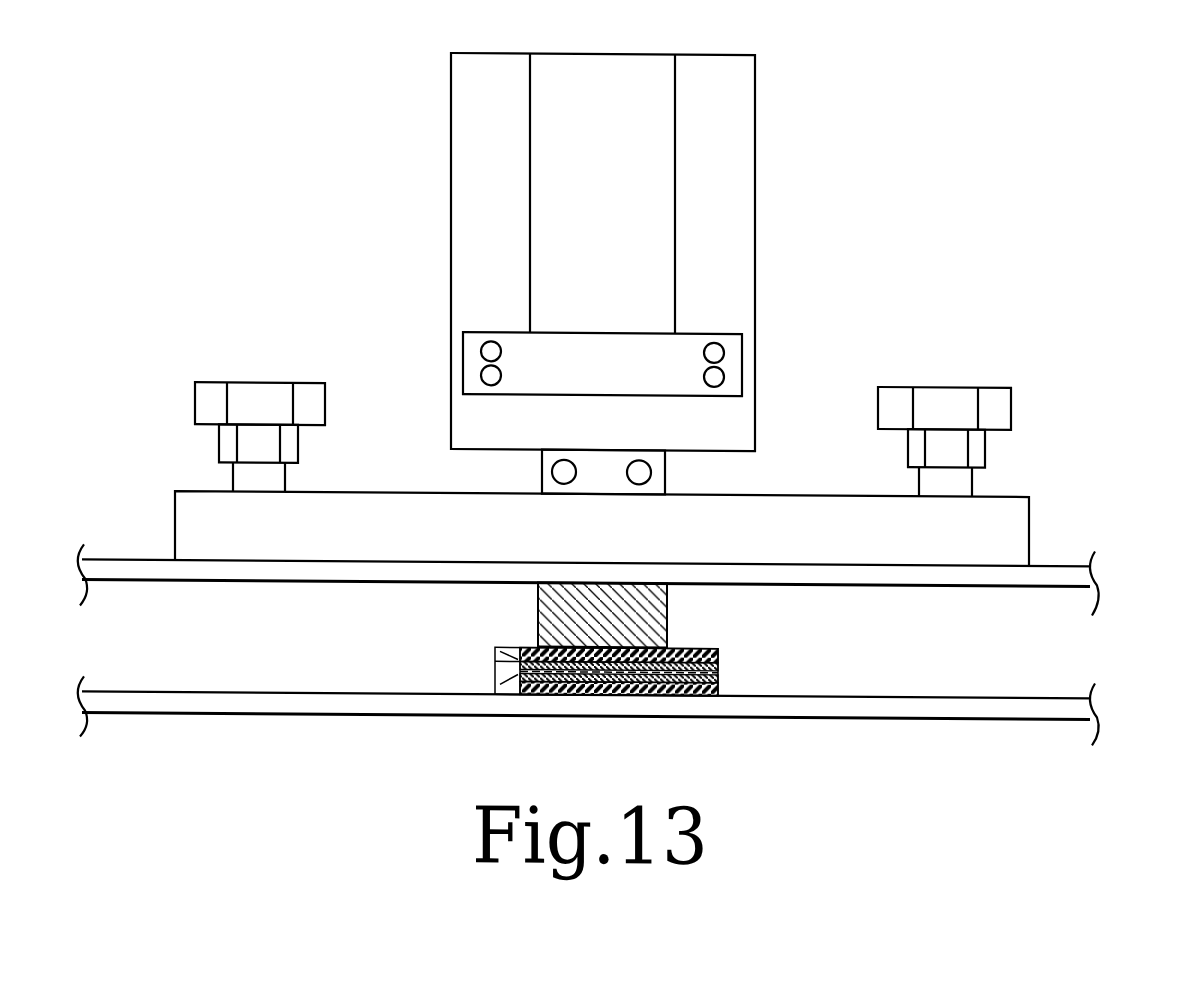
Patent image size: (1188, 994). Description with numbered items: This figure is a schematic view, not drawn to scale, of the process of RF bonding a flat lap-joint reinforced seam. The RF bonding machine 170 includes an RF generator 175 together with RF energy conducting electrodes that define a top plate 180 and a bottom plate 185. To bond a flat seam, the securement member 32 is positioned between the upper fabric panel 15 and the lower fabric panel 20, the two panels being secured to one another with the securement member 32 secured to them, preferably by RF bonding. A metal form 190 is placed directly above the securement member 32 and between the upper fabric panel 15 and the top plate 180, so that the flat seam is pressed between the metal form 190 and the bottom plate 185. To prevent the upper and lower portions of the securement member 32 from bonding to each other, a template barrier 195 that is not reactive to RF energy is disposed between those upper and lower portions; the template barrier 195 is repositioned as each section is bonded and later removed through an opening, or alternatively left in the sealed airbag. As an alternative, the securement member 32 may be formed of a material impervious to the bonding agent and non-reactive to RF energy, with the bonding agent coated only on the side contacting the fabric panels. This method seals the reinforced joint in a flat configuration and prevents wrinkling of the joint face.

The RF bonding machine 170 is at (884, 163).
The RF generator 175 is at (723, 296).
The top plate 180 is at (1053, 574).
The bottom plate 185 is at (977, 694).
The metal form 190 is at (538, 590).
The upper fabric panel 15 is at (498, 659).
The securement member 32 is at (673, 648).
The template barrier 195 is at (720, 671).
The lower fabric panel 20 is at (718, 689).